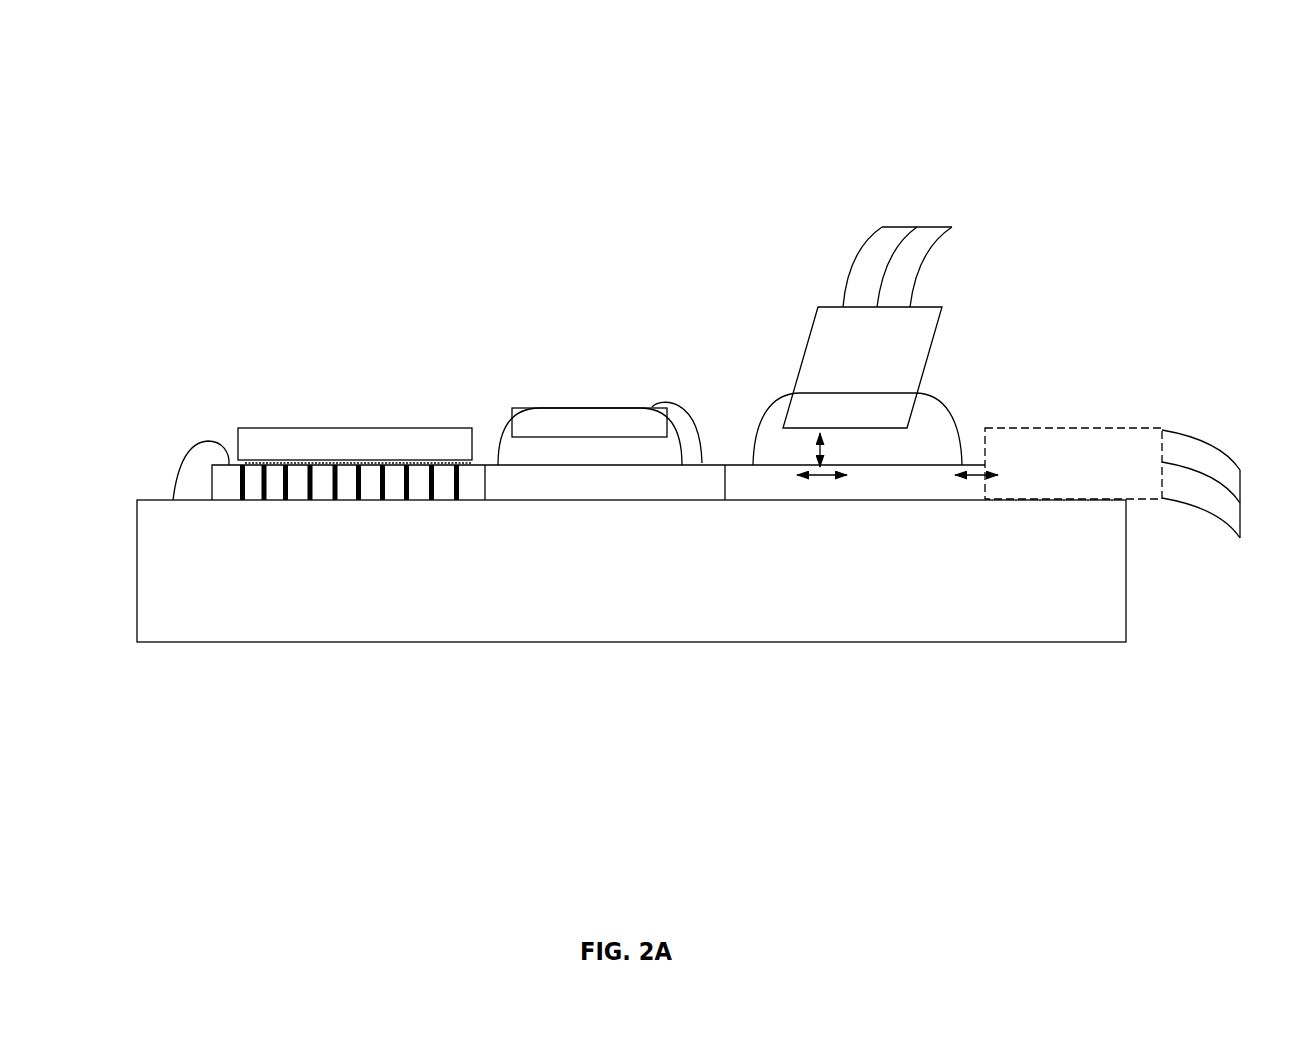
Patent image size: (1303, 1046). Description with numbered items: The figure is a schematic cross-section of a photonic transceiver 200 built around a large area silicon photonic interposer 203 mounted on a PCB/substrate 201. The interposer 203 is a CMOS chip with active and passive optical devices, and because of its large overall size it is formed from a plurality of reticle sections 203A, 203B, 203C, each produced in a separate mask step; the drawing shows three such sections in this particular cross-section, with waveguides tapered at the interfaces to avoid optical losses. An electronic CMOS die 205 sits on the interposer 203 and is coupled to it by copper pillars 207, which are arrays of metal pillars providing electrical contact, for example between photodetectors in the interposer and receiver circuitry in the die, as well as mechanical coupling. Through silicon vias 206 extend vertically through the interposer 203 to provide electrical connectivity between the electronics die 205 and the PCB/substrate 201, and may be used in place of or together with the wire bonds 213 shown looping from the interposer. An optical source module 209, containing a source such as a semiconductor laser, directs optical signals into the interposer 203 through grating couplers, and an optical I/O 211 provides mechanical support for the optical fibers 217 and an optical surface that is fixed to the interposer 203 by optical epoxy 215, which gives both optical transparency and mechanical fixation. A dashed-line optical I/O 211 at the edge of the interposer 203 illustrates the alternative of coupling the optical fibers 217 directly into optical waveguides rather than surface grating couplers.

The photonic transceiver 200 is at (217, 128).
The PCB/substrate 201 is at (611, 599).
The silicon photonic interposer 203 is at (200, 482).
The reticle section 203A is at (477, 463).
The reticle section 203B is at (627, 494).
The reticle section 203C is at (872, 494).
The electronic CMOS die 205 is at (411, 461).
The through silicon vias (TSVs) 206 is at (408, 495).
The copper pillars 207 is at (327, 467).
The optical source module 209 is at (657, 436).
The optical input/output (I/O) 211 is at (1092, 491).
The wire bonds 213 is at (188, 443).
The optical epoxy 215 is at (633, 464).
The optical fibers 217 is at (1205, 438).